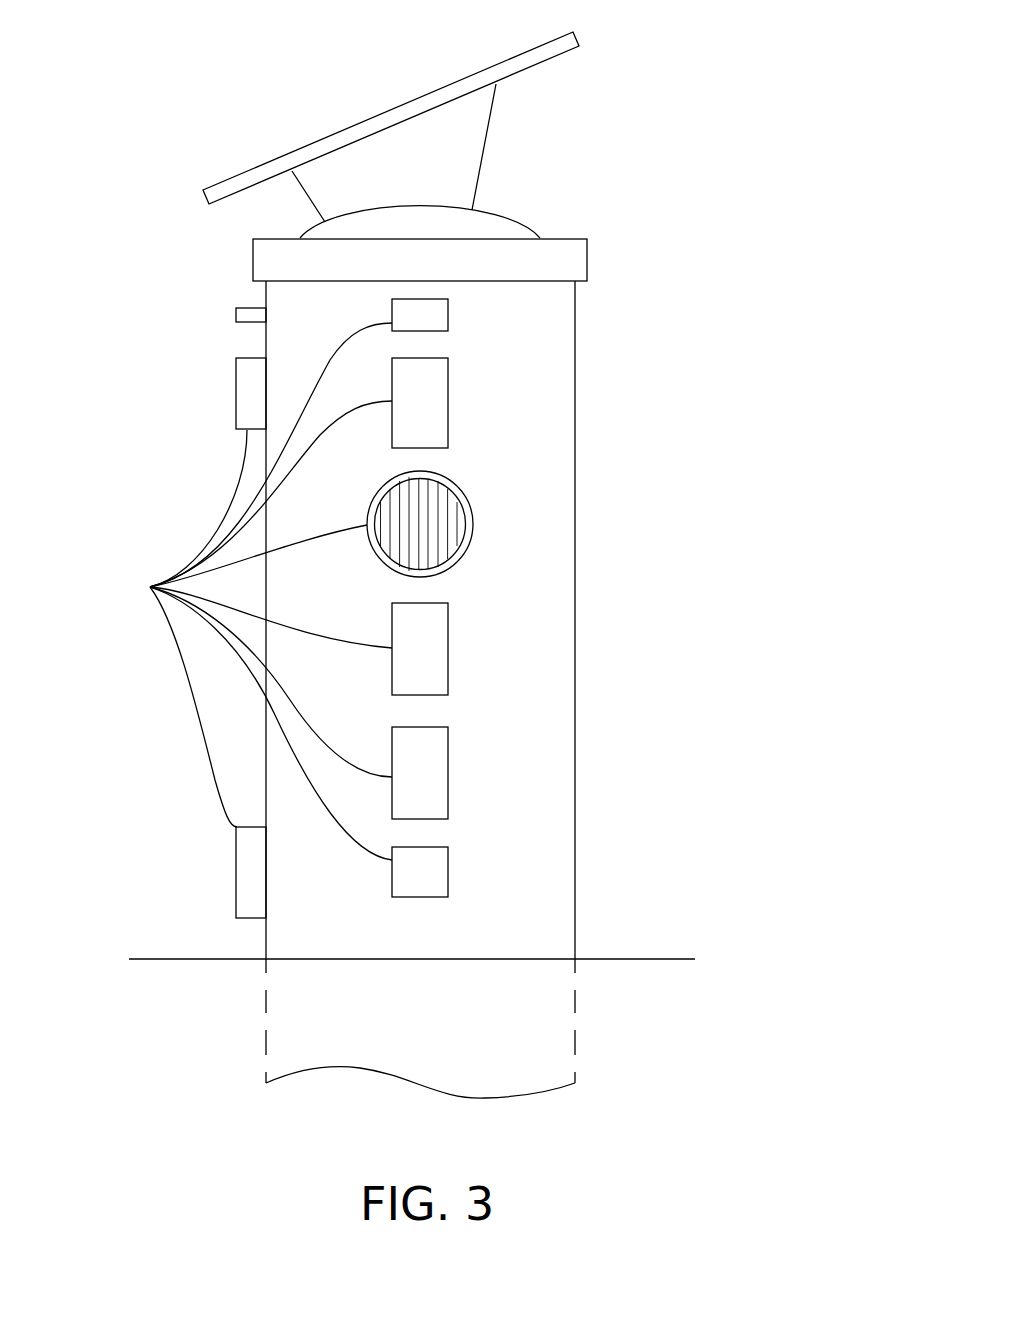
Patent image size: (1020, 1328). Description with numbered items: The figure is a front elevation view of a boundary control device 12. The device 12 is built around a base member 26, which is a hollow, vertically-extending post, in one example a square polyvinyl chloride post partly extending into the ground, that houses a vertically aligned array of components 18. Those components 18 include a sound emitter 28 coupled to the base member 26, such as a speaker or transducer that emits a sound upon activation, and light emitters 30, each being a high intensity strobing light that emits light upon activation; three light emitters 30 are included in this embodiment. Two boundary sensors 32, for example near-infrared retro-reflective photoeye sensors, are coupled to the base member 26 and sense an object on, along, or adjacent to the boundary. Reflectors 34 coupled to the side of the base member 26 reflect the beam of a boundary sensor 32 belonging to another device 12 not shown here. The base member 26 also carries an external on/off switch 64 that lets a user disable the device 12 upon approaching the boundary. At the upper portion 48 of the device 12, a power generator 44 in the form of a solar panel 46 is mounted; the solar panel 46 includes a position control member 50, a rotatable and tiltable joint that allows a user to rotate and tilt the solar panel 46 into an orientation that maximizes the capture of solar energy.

The boundary control device 12 is at (417, 562).
The components 18 is at (257, 591).
The base member 26 is at (513, 542).
The sound emitter 28 is at (458, 500).
The light emitter 30 is at (433, 402).
The boundary sensor 32 is at (430, 315).
The reflector 34 is at (247, 395).
The power generator 44 is at (516, 98).
The solar panel 46 is at (567, 45).
The upper portion 48 is at (590, 225).
The position control member 50 is at (494, 193).
The on/off switch 64 is at (236, 316).